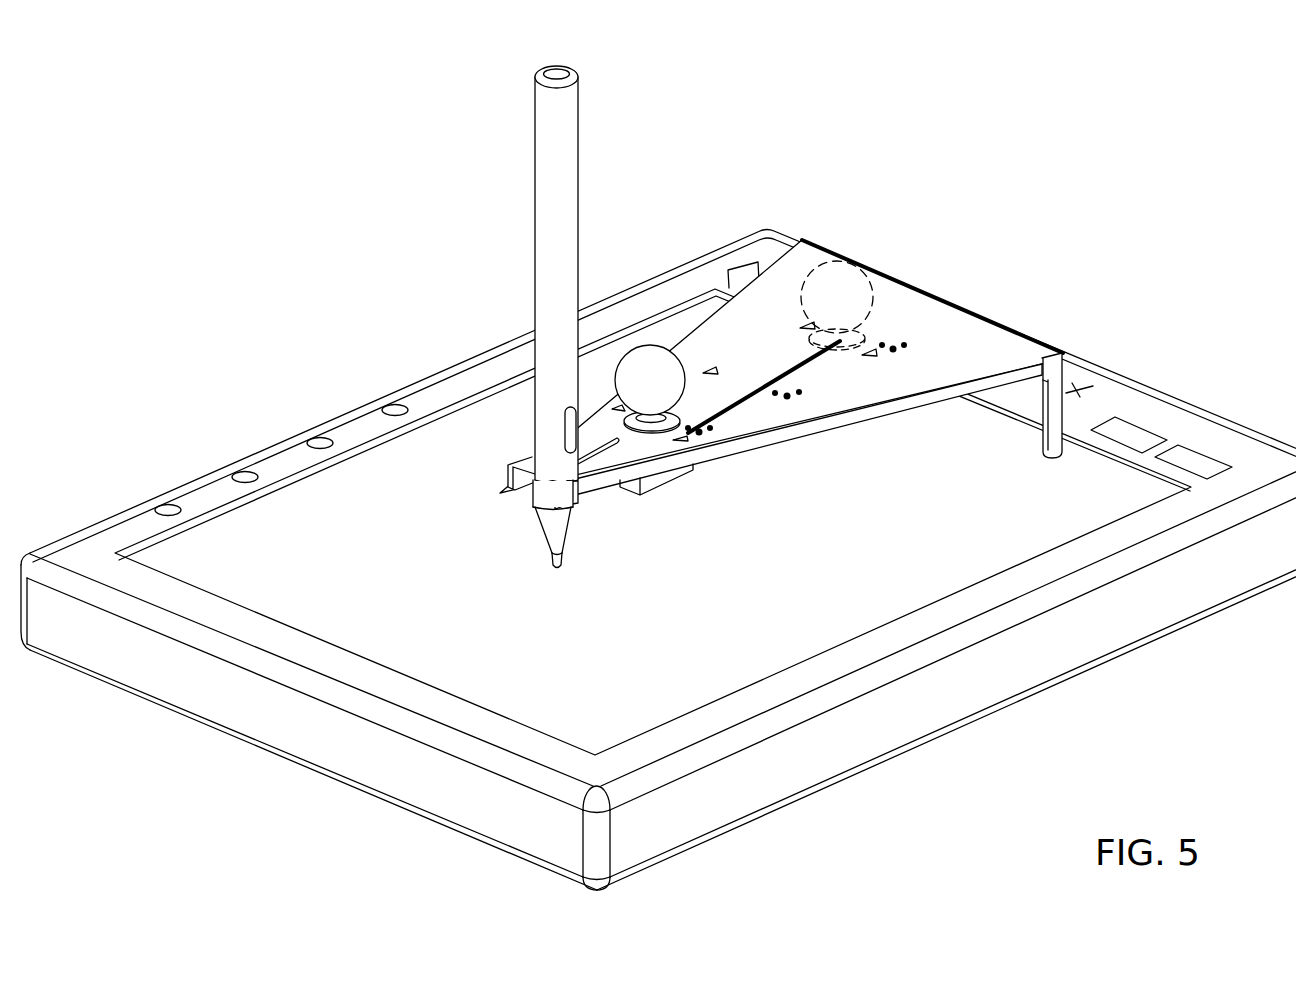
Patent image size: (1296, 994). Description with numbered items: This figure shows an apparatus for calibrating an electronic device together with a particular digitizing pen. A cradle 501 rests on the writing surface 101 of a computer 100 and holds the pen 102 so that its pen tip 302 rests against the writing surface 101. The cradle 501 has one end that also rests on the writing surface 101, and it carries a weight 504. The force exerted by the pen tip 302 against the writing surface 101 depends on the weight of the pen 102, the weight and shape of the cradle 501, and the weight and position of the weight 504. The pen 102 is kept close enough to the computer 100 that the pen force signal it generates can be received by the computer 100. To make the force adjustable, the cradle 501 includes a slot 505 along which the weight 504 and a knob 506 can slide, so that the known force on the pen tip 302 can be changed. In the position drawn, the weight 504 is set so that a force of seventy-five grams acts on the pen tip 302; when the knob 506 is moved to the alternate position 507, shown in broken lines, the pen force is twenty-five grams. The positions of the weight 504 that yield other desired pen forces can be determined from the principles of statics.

The computer 100 is at (367, 353).
The writing surface 101 is at (328, 517).
The pen 102 is at (567, 130).
The pen tip 302 is at (560, 567).
The cradle 501 is at (900, 305).
The weight 504 is at (663, 483).
The slot 505 is at (787, 360).
The knob 506 is at (657, 396).
The alternate position 507 is at (837, 278).